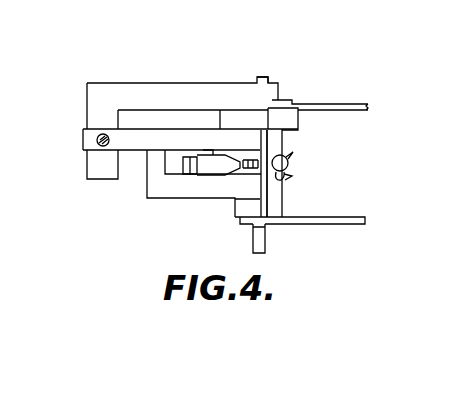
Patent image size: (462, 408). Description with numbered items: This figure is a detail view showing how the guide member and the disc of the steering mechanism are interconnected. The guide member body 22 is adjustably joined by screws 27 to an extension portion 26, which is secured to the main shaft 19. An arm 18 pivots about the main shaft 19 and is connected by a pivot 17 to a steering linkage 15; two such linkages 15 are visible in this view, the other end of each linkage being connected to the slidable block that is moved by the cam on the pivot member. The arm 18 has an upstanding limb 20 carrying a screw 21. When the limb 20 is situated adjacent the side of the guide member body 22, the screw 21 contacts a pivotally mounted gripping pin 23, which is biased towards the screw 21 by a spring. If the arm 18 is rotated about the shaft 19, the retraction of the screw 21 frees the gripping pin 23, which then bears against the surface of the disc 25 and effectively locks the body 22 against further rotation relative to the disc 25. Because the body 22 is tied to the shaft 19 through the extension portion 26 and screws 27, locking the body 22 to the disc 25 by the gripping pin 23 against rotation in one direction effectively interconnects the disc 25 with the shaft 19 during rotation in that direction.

The linkage 15 is at (332, 105).
The pivot 17 is at (248, 228).
The arm 18 is at (300, 122).
The main shaft 19 is at (268, 80).
The upstanding limb 20 is at (277, 199).
The screw 21 is at (283, 186).
The guide member body 22 is at (147, 187).
The gripping pin 23 is at (192, 174).
The disc 25 is at (288, 173).
The extension portion 26 is at (156, 94).
The screws 27 is at (97, 140).